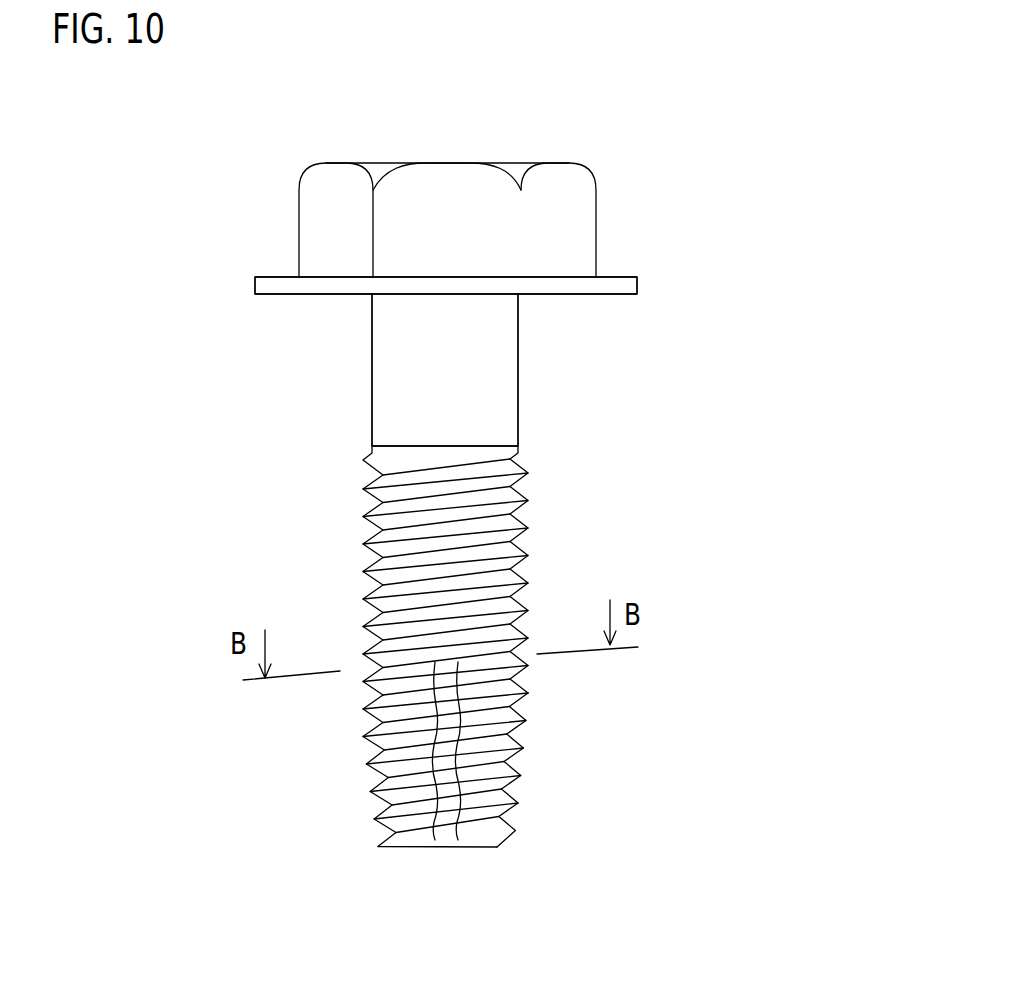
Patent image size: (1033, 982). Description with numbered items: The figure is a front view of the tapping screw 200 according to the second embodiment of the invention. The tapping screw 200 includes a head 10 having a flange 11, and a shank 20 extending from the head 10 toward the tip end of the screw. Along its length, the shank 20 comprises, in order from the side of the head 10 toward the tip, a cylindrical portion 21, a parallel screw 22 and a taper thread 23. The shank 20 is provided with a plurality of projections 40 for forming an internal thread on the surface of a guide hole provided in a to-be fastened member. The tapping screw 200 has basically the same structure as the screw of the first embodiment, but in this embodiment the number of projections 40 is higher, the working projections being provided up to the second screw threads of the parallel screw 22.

The head 10 is at (265, 187).
The flange 11 is at (253, 282).
The shank 20 is at (270, 562).
The cylindrical portion 21 is at (550, 447).
The parallel screw 22 is at (550, 698).
The taper thread 23 is at (550, 847).
The projections 40 is at (433, 812).
The tapping screw 200 is at (770, 217).